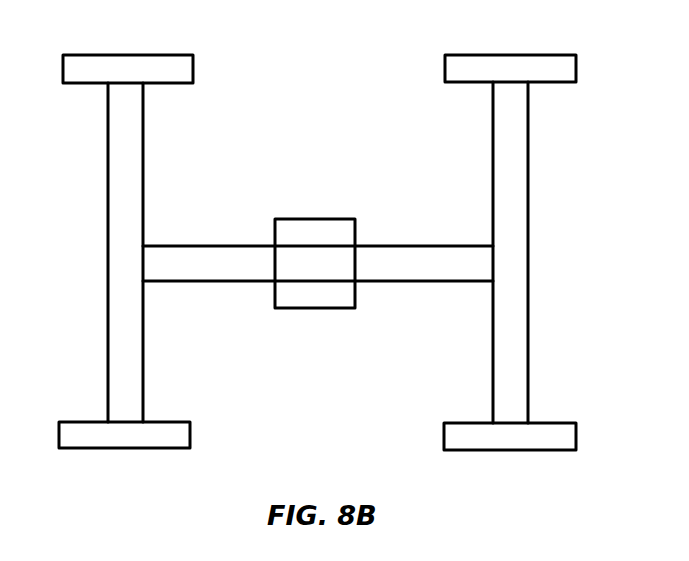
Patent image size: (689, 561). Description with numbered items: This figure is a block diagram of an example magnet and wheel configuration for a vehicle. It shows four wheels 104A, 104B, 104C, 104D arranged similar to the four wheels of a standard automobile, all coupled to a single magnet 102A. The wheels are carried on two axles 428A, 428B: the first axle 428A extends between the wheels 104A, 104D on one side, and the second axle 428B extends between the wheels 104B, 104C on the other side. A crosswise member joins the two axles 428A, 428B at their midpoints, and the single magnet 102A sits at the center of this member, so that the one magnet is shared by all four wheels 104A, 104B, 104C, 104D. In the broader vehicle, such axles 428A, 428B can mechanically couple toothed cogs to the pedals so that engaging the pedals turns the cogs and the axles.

The wheel 104A is at (178, 72).
The wheel 104B is at (462, 73).
The wheel 104C is at (563, 438).
The wheel 104D is at (65, 440).
The axle 428A is at (117, 153).
The axle 428B is at (518, 240).
The magnet 102A is at (312, 290).